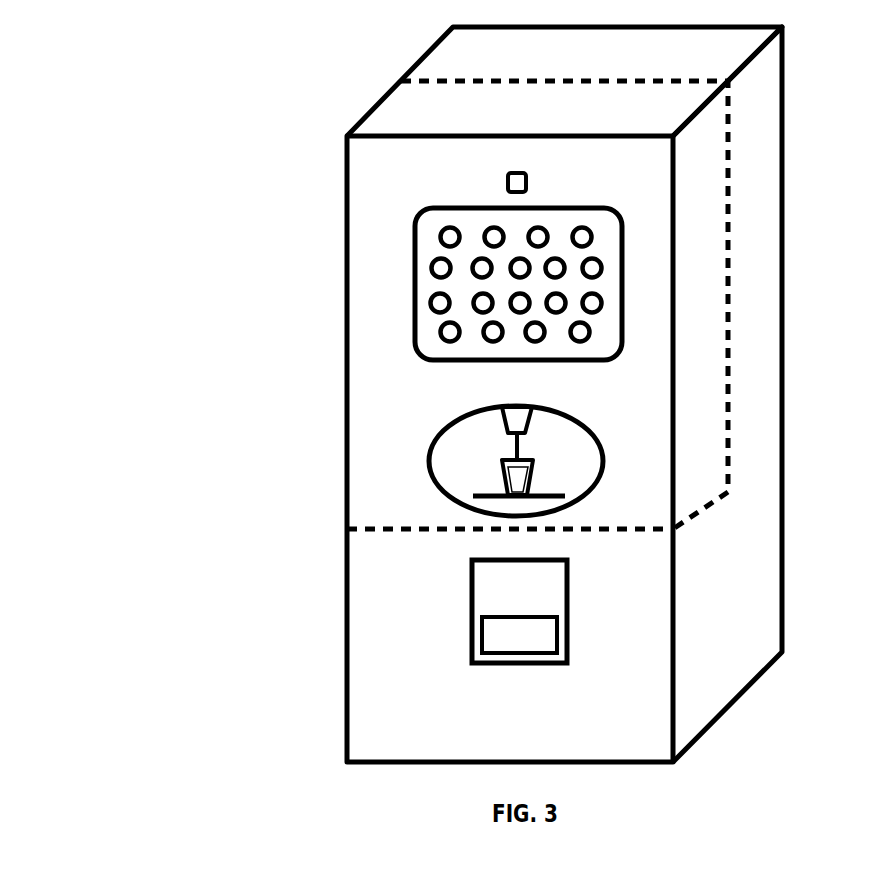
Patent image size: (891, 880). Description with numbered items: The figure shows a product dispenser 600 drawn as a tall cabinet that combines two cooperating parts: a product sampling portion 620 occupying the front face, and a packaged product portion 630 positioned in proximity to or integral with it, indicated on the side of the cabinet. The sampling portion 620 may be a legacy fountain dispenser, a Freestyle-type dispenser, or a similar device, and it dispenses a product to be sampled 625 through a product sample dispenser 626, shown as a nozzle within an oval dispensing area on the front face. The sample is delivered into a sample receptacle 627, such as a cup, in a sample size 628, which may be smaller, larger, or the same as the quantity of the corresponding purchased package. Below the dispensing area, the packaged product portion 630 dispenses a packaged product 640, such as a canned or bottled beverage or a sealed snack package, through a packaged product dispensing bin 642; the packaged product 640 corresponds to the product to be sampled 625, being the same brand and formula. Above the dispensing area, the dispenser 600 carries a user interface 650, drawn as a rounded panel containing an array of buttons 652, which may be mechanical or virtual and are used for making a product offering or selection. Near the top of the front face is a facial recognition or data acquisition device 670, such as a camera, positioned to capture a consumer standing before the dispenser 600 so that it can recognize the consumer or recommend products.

The product dispenser 600 is at (475, 394).
The product sampling portion 620 is at (370, 357).
The product to be sampled 625 is at (551, 423).
The product sample dispenser 626 is at (527, 415).
The sample receptacle 627 is at (533, 472).
The sample size 628 is at (490, 491).
The packaged product portion 630 is at (737, 548).
The packaged product 640 is at (548, 628).
The packaged product dispensing bin 642 is at (530, 635).
The user interface 650 is at (426, 276).
The buttons 652 is at (441, 330).
The facial recognition device 670 is at (520, 182).